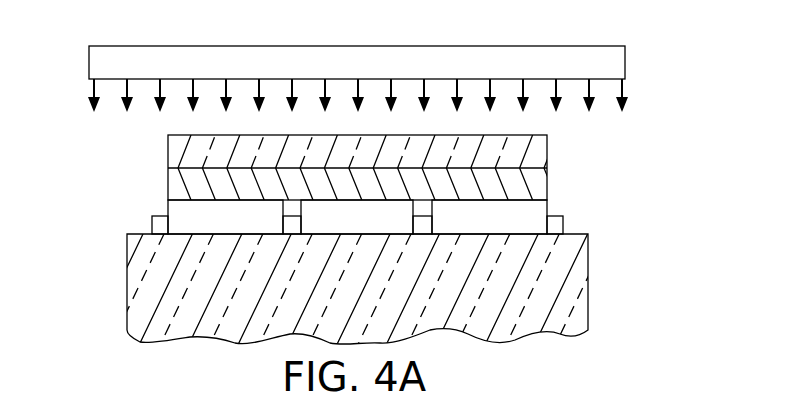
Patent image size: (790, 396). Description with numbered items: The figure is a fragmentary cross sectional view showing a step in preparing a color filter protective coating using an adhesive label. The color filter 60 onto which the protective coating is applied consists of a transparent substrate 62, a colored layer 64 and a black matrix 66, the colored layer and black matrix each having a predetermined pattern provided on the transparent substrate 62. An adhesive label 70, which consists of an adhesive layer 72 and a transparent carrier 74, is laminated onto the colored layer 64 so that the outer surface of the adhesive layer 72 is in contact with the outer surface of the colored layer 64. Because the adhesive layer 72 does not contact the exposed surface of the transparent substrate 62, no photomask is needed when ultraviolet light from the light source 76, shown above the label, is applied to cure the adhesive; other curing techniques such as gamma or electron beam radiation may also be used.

The color filter 60 is at (341, 247).
The transparent substrate 62 is at (547, 181).
The colored layer 64 is at (530, 215).
The black matrix 66 is at (424, 217).
The adhesive label 70 is at (353, 161).
The adhesive layer 72 is at (168, 151).
The transparent carrier 74 is at (547, 151).
The light source 76 is at (625, 63).